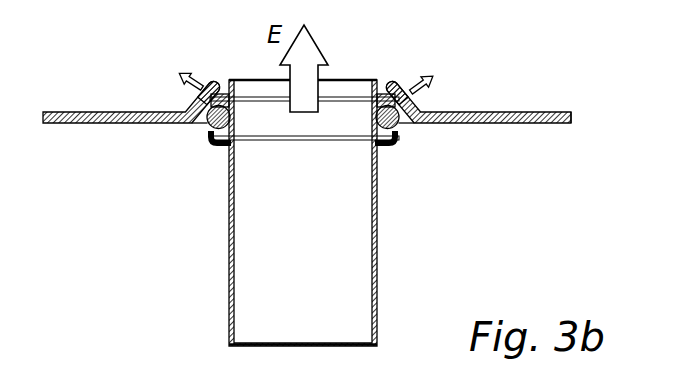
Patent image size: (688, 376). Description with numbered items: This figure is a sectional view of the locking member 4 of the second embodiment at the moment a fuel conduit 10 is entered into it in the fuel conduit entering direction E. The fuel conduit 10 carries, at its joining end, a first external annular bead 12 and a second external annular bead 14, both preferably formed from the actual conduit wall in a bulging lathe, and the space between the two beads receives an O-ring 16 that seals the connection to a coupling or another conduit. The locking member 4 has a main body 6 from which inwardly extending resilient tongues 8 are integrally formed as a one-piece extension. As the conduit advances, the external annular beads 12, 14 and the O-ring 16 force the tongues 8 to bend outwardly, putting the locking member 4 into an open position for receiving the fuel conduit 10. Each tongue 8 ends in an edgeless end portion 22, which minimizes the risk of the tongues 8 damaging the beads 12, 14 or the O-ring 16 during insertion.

The locking member 4 is at (490, 124).
The main body 6 is at (537, 124).
The resilient tongues 8 is at (425, 109).
The fuel conduit 10 is at (377, 245).
The first external annular bead 12 is at (422, 104).
The second external annular bead 14 is at (397, 143).
The O-ring 16 is at (209, 123).
The edgeless end portion 22 is at (385, 78).